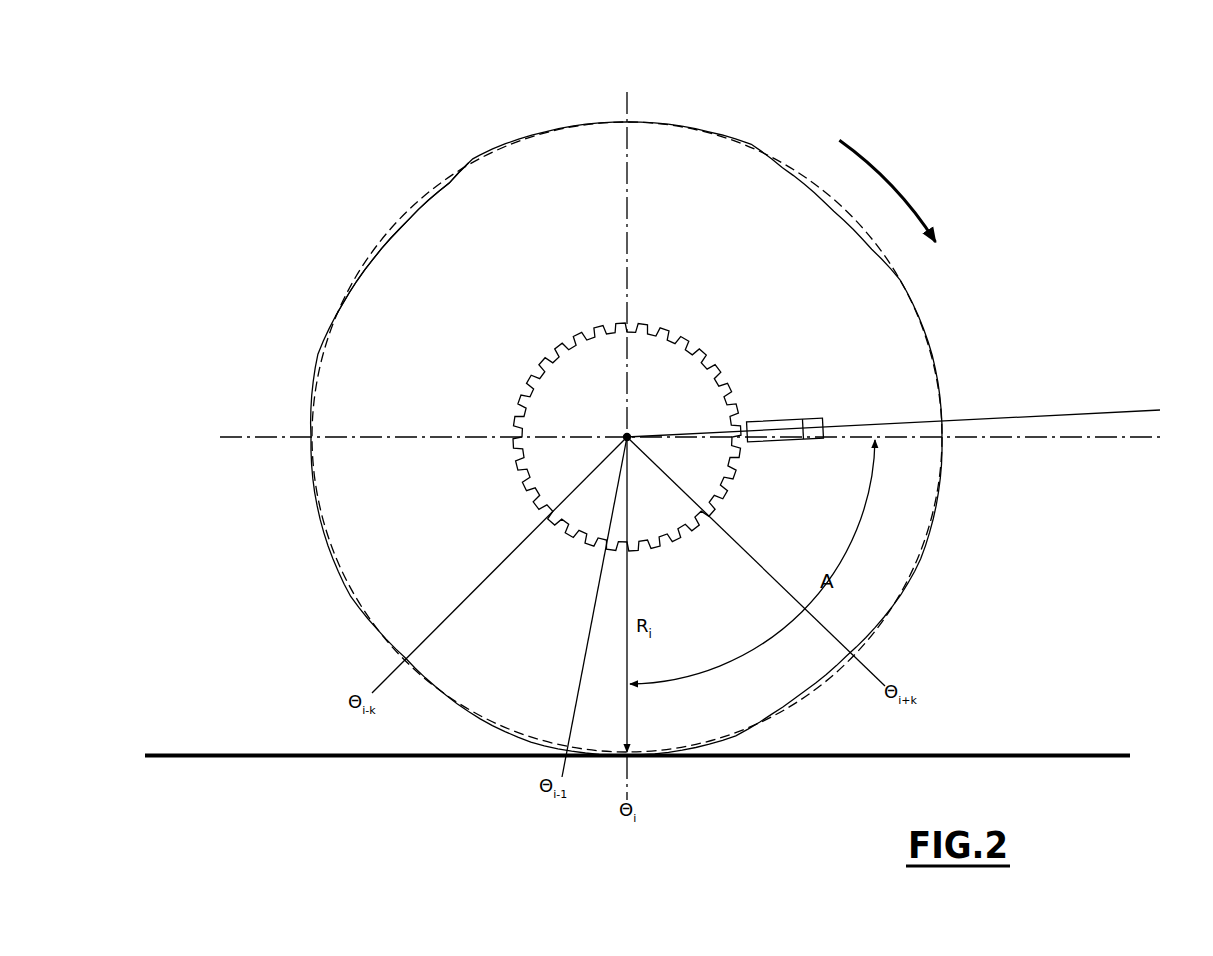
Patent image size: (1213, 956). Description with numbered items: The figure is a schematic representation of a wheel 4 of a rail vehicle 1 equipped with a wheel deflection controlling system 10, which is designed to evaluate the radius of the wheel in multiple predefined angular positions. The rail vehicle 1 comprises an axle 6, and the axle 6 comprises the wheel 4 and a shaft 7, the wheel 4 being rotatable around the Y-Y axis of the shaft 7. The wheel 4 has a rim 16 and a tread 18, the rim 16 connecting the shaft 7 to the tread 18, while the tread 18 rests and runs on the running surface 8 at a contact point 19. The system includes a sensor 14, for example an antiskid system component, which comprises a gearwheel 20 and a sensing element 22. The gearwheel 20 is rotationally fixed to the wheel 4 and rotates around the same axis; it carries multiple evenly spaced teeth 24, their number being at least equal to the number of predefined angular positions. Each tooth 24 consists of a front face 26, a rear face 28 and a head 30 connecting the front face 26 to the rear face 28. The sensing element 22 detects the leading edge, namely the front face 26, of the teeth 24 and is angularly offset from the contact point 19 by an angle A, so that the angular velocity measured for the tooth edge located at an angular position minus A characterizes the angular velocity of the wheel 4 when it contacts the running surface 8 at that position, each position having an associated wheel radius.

The rail vehicle 1 is at (990, 155).
The wheel 4 is at (658, 190).
The axle 6 is at (993, 248).
The shaft 7 is at (625, 435).
The running surface 8 is at (1012, 755).
The wheel deflection controlling system 10 is at (770, 335).
The sensor 14 is at (747, 405).
The rim 16 is at (513, 187).
The tread 18 is at (763, 145).
The contact point 19 is at (632, 758).
The gearwheel 20 is at (716, 505).
The sensing element 22 is at (803, 418).
The teeth 24 is at (675, 333).
The front face 26 is at (703, 348).
The rear face 28 is at (682, 337).
The head 30 is at (698, 337).